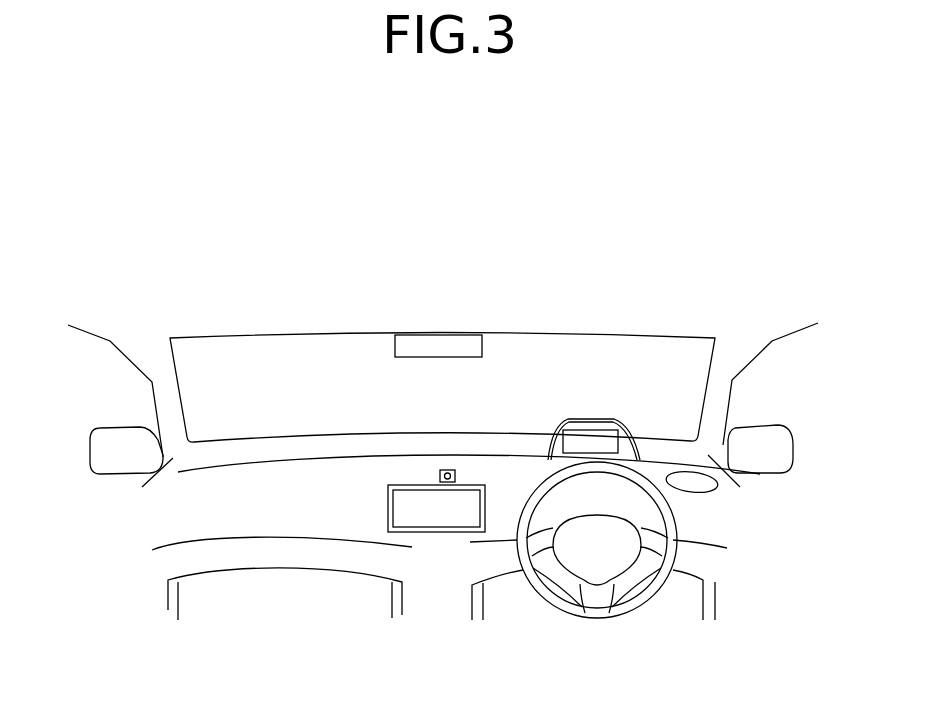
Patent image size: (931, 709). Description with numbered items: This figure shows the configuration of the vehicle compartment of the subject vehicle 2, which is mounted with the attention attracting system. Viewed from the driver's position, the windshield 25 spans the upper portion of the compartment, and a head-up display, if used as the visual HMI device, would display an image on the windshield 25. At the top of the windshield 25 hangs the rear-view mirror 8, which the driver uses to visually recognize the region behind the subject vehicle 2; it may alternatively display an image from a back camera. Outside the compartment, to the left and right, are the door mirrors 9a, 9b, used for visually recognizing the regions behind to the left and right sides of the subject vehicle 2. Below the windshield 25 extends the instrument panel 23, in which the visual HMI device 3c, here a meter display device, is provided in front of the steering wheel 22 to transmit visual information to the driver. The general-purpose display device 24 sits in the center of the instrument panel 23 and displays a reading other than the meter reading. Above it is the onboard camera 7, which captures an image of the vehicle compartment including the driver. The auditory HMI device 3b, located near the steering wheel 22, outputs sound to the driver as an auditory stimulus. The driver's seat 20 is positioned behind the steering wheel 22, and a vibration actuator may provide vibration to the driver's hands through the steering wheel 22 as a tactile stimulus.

The subject vehicle 2 is at (278, 269).
The auditory HMI device 3b is at (713, 490).
The visual HMI device 3c is at (593, 432).
The onboard camera 7 is at (438, 476).
The rear-view mirror 8 is at (445, 342).
The door mirror 9a is at (102, 438).
The door mirror 9b is at (765, 432).
The driver's seat 20 is at (692, 592).
The steering wheel 22 is at (550, 603).
The instrument panel 23 is at (307, 467).
The general-purpose display device 24 is at (400, 513).
The windshield 25 is at (683, 348).